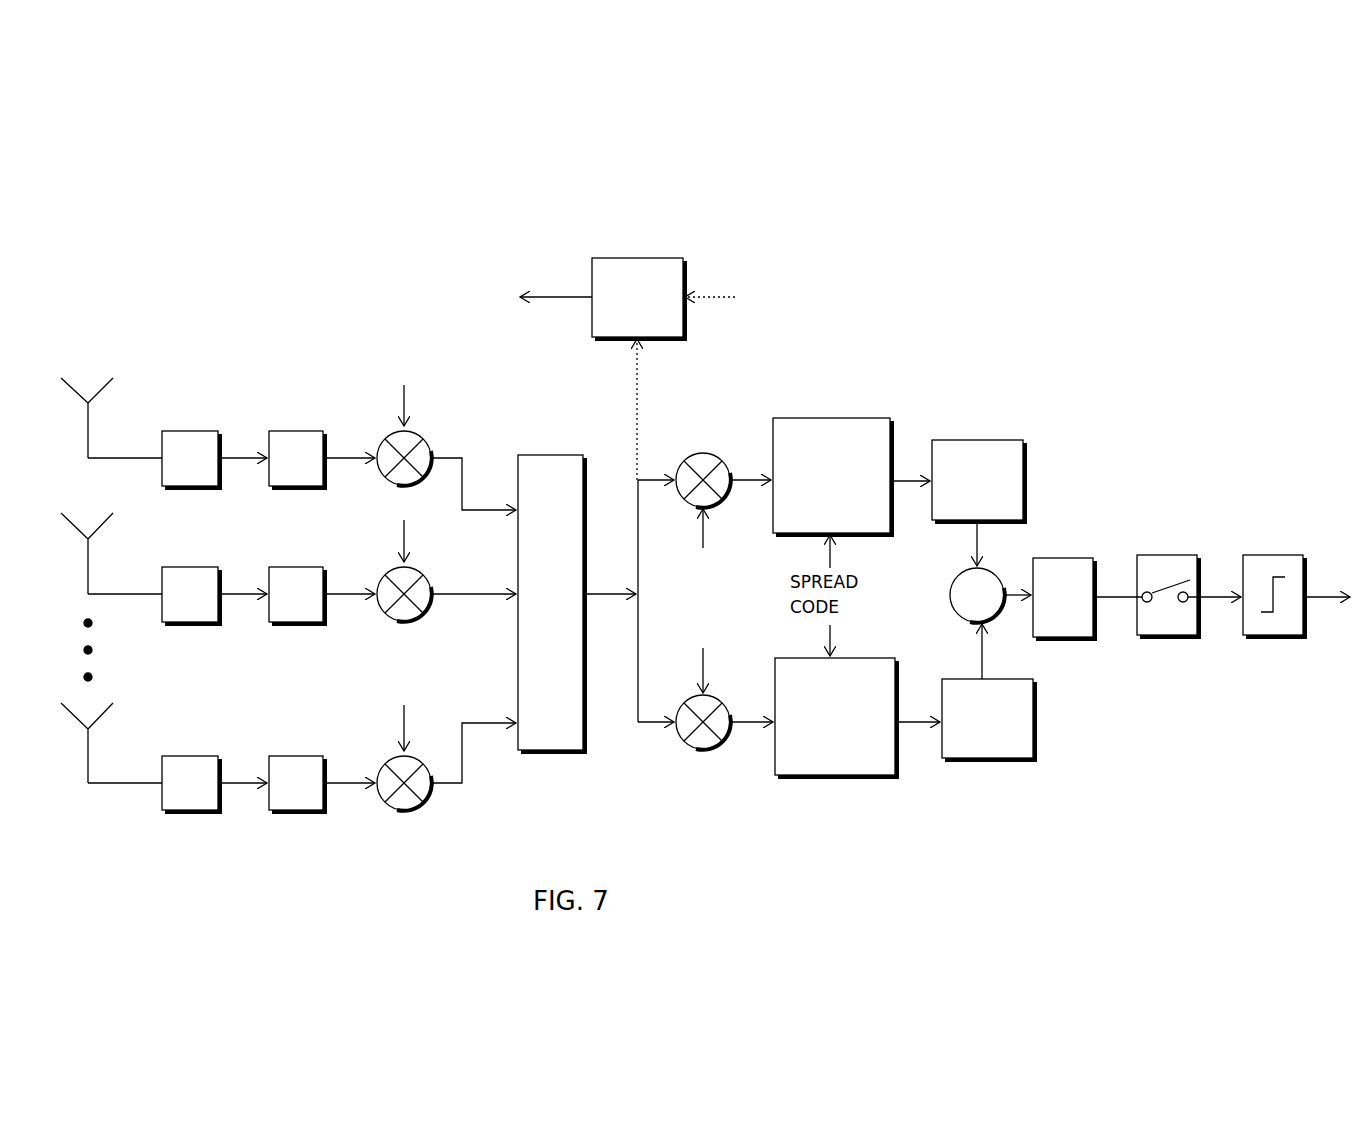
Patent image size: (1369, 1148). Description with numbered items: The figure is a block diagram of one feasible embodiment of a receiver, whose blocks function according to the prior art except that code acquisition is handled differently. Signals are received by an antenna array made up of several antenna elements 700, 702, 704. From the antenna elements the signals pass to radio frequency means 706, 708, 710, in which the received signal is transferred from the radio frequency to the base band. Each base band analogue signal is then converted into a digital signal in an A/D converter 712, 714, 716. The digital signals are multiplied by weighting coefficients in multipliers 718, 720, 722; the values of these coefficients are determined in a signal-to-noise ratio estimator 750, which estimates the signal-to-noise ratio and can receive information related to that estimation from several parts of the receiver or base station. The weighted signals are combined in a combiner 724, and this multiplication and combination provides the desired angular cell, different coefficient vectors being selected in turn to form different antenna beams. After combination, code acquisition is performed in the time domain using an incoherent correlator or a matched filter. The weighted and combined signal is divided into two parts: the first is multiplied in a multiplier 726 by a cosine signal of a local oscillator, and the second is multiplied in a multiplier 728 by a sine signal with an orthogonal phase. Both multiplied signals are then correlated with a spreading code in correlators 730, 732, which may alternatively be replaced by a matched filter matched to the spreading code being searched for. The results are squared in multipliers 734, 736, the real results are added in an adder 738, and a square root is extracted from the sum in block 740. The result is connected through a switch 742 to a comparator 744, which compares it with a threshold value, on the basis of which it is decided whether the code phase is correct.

The antenna element 700 is at (85, 427).
The antenna element 702 is at (85, 566).
The antenna element 704 is at (85, 757).
The radio frequency means 706 is at (190, 431).
The radio frequency means 708 is at (190, 567).
The radio frequency means 710 is at (190, 756).
The A/D converter 712 is at (303, 431).
The A/D converter 714 is at (296, 567).
The A/D converter 716 is at (296, 756).
The multiplier 718 is at (385, 435).
The multiplier 720 is at (388, 570).
The multiplier 722 is at (390, 758).
The combiner 724 is at (558, 455).
The multiplier 726 is at (696, 453).
The multiplier 728 is at (708, 750).
The correlator 730 is at (818, 418).
The correlator 732 is at (838, 775).
The multiplier 734 is at (955, 440).
The multiplier 736 is at (968, 758).
The adder 738 is at (962, 612).
The square root block 740 is at (1043, 558).
The switch 742 is at (1145, 555).
The comparator 744 is at (1251, 555).
The signal-to-noise ratio estimator 750 is at (630, 258).